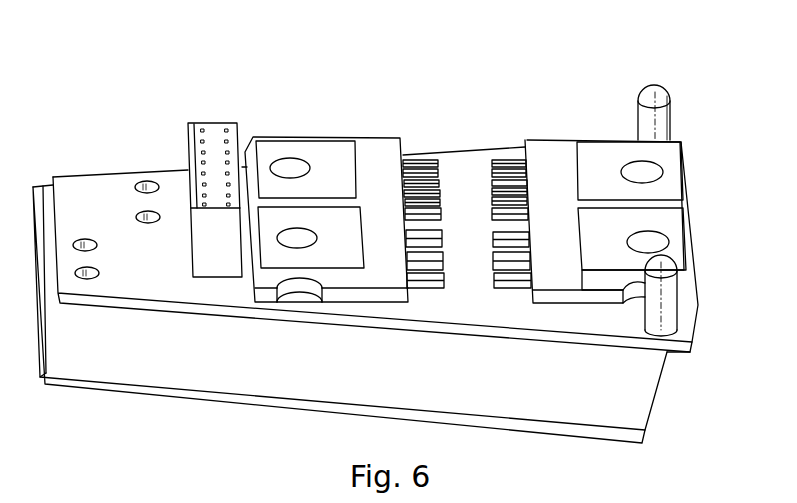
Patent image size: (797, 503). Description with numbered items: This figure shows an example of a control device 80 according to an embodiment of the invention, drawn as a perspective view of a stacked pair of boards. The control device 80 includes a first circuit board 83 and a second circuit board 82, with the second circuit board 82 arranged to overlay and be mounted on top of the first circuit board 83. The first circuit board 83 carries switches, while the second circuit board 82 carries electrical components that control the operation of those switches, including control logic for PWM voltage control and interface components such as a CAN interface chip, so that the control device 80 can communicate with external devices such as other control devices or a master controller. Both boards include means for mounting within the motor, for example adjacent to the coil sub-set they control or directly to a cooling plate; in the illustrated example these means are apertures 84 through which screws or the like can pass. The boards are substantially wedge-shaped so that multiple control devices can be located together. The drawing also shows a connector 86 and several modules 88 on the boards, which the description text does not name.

The control device 80 is at (142, 82).
The second circuit board 82 is at (154, 277).
The first circuit board 83 is at (230, 357).
The apertures 84 is at (147, 186).
The connector 86 is at (215, 135).
The terminal modules 88 is at (328, 152).